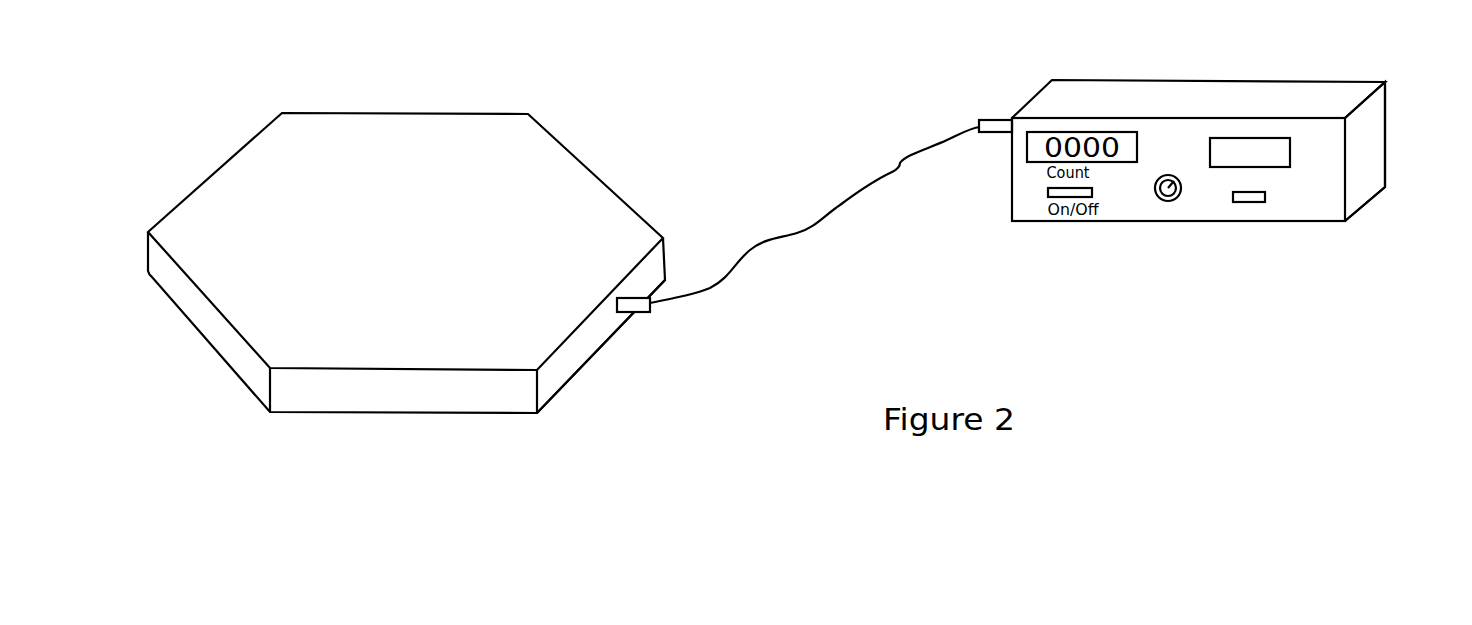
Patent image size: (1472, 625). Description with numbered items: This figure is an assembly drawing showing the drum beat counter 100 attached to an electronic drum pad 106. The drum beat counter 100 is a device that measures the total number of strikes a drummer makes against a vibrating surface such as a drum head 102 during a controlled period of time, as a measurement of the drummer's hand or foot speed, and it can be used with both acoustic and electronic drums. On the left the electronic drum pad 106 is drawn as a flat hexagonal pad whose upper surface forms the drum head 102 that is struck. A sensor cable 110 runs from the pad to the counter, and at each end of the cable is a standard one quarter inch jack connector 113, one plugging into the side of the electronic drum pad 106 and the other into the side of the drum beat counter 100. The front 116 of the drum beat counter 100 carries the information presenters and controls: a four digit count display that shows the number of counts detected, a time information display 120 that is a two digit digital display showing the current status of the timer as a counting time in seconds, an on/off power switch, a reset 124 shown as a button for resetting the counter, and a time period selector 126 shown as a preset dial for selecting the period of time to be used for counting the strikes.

The drum beat counter 100 is at (1130, 82).
The drum head 102 is at (415, 138).
The electronic drum pad 106 is at (605, 330).
The sensor cable 110 is at (833, 208).
The jack connectors 113 is at (651, 313).
The front 116 is at (1323, 172).
The time information display 120 is at (1250, 140).
The reset 124 is at (1265, 198).
The time period selector 126 is at (1170, 177).